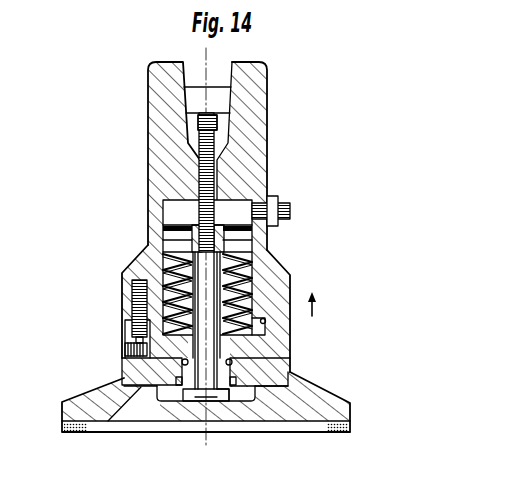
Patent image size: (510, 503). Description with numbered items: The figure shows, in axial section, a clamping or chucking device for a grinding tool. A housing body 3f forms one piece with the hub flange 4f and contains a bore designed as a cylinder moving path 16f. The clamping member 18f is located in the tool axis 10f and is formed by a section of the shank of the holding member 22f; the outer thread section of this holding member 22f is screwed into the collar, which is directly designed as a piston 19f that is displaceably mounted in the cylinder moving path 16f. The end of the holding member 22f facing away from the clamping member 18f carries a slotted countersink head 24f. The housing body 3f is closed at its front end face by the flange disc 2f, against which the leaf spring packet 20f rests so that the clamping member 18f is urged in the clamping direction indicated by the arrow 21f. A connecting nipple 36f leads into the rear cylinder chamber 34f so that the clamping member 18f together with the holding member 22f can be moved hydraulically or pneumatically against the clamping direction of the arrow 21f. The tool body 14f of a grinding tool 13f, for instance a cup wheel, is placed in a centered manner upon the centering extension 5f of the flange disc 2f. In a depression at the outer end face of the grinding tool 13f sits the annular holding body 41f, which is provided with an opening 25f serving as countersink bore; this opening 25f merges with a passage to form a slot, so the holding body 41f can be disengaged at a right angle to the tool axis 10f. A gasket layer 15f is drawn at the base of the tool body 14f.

The flange disc 2f is at (281, 345).
The housing body 3f is at (281, 284).
The hub flange 4f is at (269, 113).
The centering extension 5f is at (181, 404).
The tool axis 10f is at (208, 440).
The grinding tool 13f is at (317, 437).
The tool body 14f is at (310, 393).
The gasket 15f is at (345, 433).
The cylinder moving path 16f is at (166, 212).
The clamping member 18f is at (241, 267).
The piston 19f is at (240, 227).
The leaf spring packet 20f is at (157, 273).
The arrow indicating clamping direction 21f is at (327, 305).
The holding member 22f is at (183, 403).
The countersink head 24f is at (201, 404).
The opening 25f is at (223, 405).
The rear cylinder chamber 34f is at (190, 201).
The connecting nipple 36f is at (284, 201).
The holding body 41f is at (257, 408).